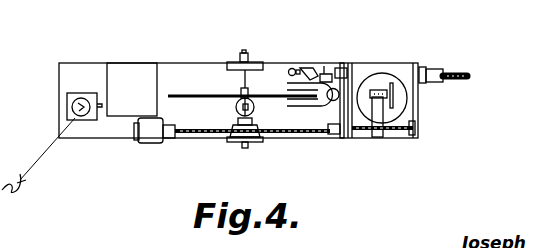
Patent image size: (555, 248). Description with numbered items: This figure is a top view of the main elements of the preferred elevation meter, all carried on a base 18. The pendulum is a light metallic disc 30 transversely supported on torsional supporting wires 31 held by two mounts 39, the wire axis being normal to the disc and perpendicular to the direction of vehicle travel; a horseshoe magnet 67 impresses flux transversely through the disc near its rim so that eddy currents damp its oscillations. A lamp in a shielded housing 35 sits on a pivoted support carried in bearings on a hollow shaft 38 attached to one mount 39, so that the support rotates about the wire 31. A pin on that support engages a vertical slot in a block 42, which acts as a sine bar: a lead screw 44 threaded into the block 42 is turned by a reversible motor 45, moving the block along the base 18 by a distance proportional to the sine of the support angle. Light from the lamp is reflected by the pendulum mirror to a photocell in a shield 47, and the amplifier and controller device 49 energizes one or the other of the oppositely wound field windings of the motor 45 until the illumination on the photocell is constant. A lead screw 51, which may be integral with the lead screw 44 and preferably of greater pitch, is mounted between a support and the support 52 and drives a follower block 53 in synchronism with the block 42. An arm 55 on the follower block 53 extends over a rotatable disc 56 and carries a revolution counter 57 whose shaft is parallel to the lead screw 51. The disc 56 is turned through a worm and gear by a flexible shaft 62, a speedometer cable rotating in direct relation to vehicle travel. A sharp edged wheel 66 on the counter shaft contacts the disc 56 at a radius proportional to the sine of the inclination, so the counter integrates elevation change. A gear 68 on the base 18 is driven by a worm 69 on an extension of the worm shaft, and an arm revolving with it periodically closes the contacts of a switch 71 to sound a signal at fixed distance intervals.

The base 18 is at (97, 132).
The pendulum disc 30 is at (180, 94).
The torsional supporting wires 31 is at (244, 75).
The shielded housing 35 is at (255, 108).
The hollow shaft 38 is at (232, 138).
The mount 39 is at (252, 62).
The block 42 is at (249, 148).
The lead screw 44 is at (190, 136).
The reversible motor 45 is at (152, 137).
The shield 47 is at (67, 100).
The amplifier and controller device 49 is at (127, 70).
The lead screw 51 is at (365, 133).
The support 52 is at (418, 138).
The follower block 53 is at (378, 130).
The arm 55 is at (413, 117).
The rotatable disc 56 is at (392, 76).
The revolution counter 57 is at (376, 88).
The flexible shaft 62 is at (455, 71).
The sharp edged wheel 66 is at (393, 98).
The horseshoe magnet 67 is at (326, 106).
The gear 68 is at (310, 78).
The worm 69 is at (326, 76).
The switch 71 is at (292, 68).